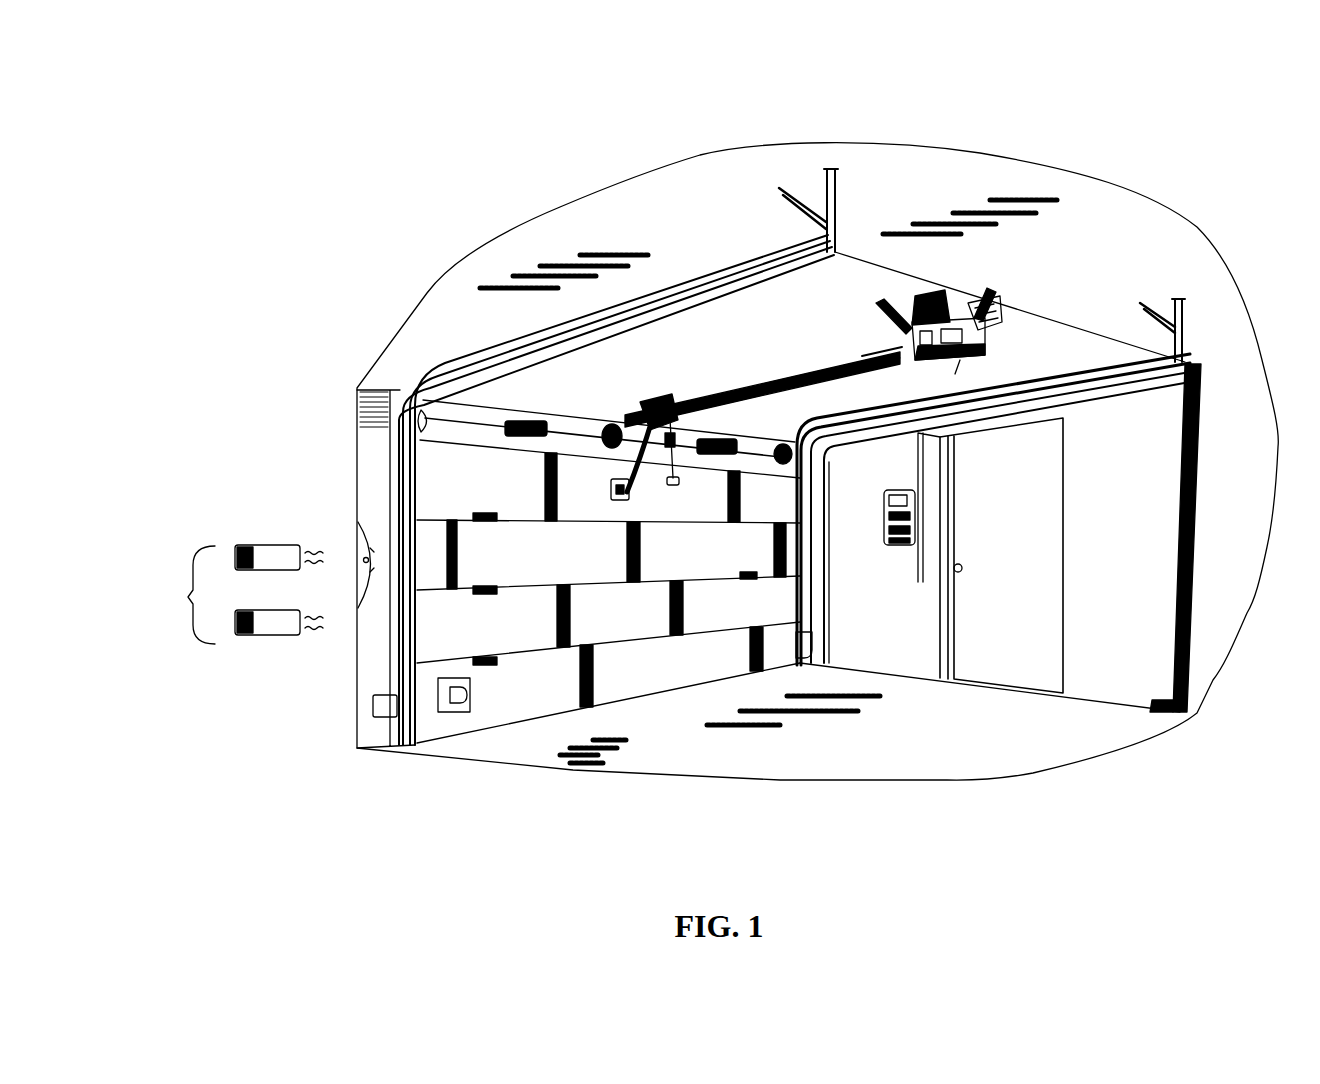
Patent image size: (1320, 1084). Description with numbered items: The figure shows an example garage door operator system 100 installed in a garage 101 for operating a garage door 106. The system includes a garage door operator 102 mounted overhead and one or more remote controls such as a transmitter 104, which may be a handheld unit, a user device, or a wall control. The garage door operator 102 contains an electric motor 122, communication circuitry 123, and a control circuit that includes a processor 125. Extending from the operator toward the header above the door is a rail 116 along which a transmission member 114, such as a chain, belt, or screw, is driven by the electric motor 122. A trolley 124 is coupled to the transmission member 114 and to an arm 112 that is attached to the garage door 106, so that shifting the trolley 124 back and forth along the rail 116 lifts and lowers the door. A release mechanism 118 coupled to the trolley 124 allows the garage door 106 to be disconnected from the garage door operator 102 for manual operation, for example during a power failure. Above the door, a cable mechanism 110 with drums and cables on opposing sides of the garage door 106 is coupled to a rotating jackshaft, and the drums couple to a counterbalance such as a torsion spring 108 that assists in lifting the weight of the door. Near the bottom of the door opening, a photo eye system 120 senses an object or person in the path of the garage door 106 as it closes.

The garage door operator system 100 is at (1145, 156).
The garage 101 is at (952, 782).
The garage door operator 102 is at (1004, 300).
The transmitter 104 is at (190, 597).
The garage door 106 is at (625, 680).
The torsion spring 108 is at (560, 436).
The cable mechanism 110 is at (457, 400).
The arm 112 is at (635, 505).
The transmission member 114 is at (770, 385).
The rail 116 is at (762, 396).
The release mechanism 118 is at (688, 479).
The photo eye system 120 is at (390, 718).
The electric motor 122 is at (905, 348).
The communication circuitry 123 is at (944, 312).
The trolley 124 is at (652, 397).
The processor 125 is at (921, 320).